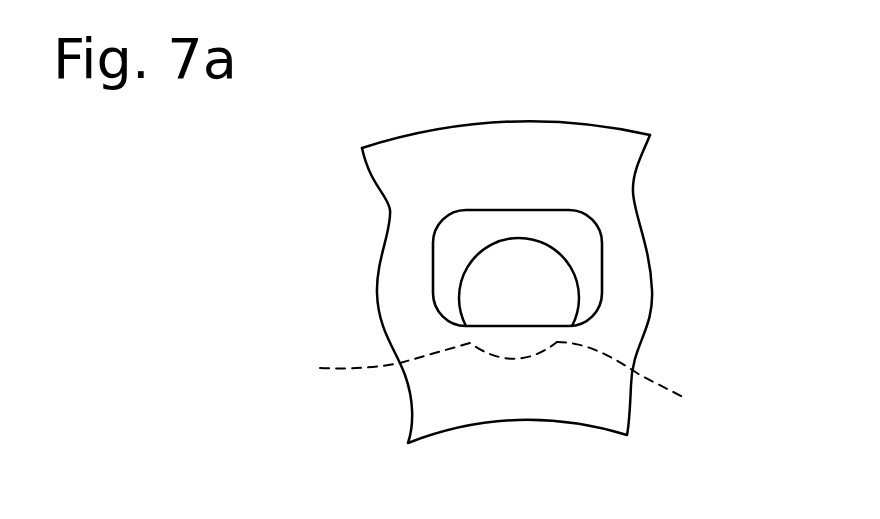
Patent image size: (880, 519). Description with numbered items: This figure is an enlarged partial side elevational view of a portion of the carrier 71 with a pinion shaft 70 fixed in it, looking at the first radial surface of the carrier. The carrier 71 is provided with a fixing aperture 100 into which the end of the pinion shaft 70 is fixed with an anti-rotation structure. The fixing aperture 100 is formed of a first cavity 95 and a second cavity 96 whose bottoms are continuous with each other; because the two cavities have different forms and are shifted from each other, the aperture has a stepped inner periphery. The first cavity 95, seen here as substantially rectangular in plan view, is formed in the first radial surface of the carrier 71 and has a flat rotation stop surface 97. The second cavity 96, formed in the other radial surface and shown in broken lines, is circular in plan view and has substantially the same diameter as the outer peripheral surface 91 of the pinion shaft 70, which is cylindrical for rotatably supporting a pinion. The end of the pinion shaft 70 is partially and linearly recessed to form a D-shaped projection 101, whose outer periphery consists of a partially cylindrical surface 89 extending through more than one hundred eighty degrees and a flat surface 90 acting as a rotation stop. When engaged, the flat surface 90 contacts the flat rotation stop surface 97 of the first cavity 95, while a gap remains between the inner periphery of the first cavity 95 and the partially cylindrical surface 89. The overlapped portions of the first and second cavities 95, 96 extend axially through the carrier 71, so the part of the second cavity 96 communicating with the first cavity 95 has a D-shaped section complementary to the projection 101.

The pinion shaft 70 is at (638, 220).
The carrier 71 is at (495, 130).
The partially cylindrical surface 89 is at (528, 240).
The flat surface 90 is at (535, 325).
The outer peripheral surface 91 is at (640, 378).
The first cavity 95 is at (447, 238).
The second cavity 96 is at (412, 365).
The flat rotation stop surface 97 is at (503, 323).
The fixing aperture 100 is at (487, 232).
The projection 101 is at (533, 283).